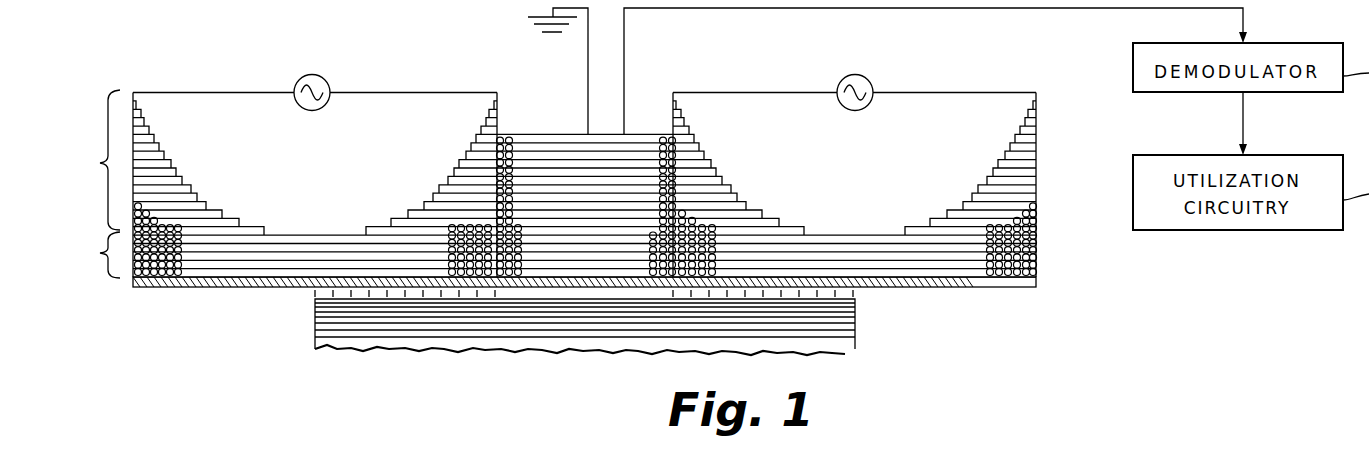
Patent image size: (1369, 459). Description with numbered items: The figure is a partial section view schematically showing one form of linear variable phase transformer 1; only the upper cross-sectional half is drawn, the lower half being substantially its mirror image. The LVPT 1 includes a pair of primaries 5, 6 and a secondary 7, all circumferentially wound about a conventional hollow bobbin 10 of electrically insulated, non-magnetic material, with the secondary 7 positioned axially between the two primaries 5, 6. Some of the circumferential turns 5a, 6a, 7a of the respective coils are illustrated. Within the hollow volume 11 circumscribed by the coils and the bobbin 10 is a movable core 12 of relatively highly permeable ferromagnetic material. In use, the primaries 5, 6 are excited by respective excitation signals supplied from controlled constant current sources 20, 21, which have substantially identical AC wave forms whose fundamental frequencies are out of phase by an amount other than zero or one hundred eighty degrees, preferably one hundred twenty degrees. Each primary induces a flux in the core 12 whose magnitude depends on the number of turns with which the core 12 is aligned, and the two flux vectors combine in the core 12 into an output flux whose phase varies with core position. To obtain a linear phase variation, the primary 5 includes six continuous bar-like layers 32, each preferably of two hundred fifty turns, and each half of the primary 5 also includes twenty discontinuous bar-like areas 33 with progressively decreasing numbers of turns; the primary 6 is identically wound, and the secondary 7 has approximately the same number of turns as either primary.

The linear variable phase transformer 1 is at (966, 306).
The first primary 5 is at (310, 188).
The circumferential turns of first primary 5a is at (157, 286).
The second primary 6 is at (866, 190).
The circumferential turns of second primary 6a is at (702, 232).
The secondary 7 is at (558, 110).
The circumferential turns of secondary 7a is at (503, 135).
The hollow bobbin 10 is at (211, 288).
The hollow volume 11 is at (258, 321).
The movable core 12 is at (320, 330).
The controlled constant current source 20 is at (298, 79).
The controlled constant current source 21 is at (842, 78).
The continuous bar-like layers 32 is at (90, 251).
The discontinuous bar-like areas 33 is at (90, 161).